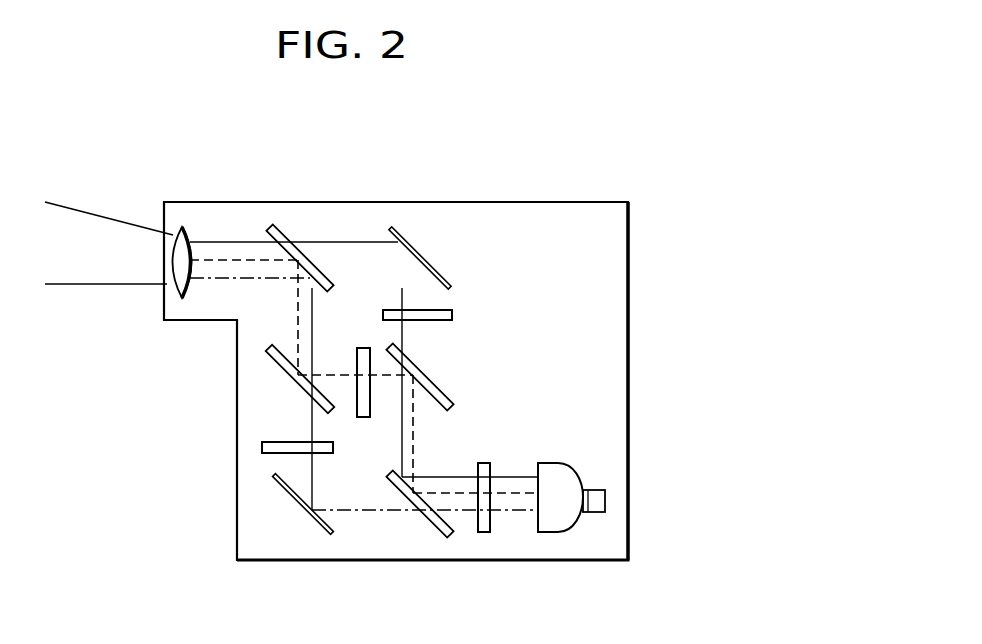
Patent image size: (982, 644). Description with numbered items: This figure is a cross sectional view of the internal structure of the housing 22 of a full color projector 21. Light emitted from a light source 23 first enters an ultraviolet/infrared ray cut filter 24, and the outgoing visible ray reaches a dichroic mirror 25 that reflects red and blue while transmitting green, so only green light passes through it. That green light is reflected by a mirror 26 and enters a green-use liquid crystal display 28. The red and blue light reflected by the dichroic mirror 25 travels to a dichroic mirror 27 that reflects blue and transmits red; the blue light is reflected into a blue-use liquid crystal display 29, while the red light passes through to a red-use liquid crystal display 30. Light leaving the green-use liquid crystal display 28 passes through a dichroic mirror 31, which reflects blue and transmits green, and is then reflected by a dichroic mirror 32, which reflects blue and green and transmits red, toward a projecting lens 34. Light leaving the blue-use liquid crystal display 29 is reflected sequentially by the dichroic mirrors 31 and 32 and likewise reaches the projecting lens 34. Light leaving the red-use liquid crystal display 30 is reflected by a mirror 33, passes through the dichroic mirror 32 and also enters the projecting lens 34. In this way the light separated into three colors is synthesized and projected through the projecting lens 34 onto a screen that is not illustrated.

The full color projector 21 is at (497, 201).
The housing 22 is at (575, 202).
The light source 23 is at (560, 463).
The ultraviolet/infrared ray cut filter 24 is at (490, 532).
The dichroic mirror 25 is at (430, 527).
The mirror 26 is at (298, 498).
The dichroic mirror 27 is at (442, 387).
The green-use liquid crystal display 28 is at (262, 447).
The blue-use liquid crystal display 29 is at (364, 417).
The red-use liquid crystal display 30 is at (452, 315).
The dichroic mirror 31 is at (275, 368).
The dichroic mirror 32 is at (283, 230).
The mirror 33 is at (397, 228).
The projecting lens 34 is at (188, 229).